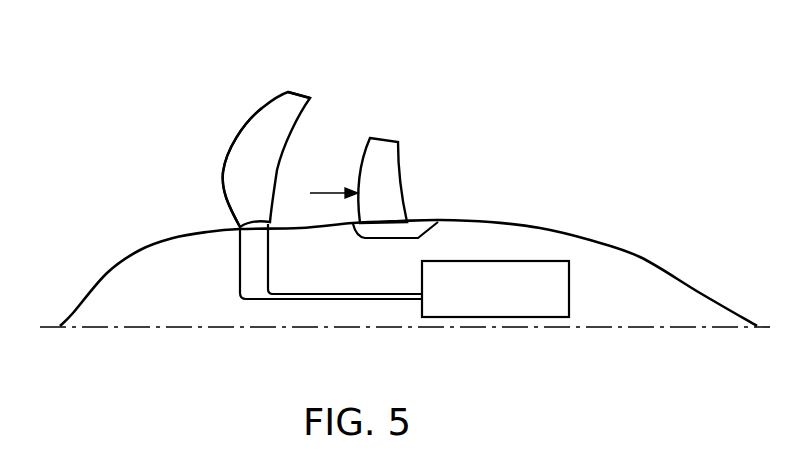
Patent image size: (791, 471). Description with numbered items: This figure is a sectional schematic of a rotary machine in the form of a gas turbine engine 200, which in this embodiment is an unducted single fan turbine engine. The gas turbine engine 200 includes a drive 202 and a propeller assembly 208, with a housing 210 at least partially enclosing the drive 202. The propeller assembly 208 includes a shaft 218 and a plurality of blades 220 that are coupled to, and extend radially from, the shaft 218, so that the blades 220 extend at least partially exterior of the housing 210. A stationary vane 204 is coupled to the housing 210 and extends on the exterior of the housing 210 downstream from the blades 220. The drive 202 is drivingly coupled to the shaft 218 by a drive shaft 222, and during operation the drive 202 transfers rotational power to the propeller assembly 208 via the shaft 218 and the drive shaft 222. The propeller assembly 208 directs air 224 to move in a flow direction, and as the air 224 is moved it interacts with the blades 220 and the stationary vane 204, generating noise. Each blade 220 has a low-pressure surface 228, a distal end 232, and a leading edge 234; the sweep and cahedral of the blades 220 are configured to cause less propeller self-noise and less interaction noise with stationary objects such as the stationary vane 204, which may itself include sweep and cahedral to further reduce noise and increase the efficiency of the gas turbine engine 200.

The gas turbine engine 200 is at (577, 122).
The drive 202 is at (569, 288).
The stationary vane 204 is at (380, 162).
The propeller assembly 208 is at (183, 60).
The housing 210 is at (527, 225).
The shaft 218 is at (257, 260).
The blades 220 is at (270, 138).
The drive shaft 222 is at (343, 300).
The air 224 is at (323, 190).
The low-pressure surface 228 is at (247, 148).
The distal end 232 is at (305, 92).
The leading edge 234 is at (224, 151).